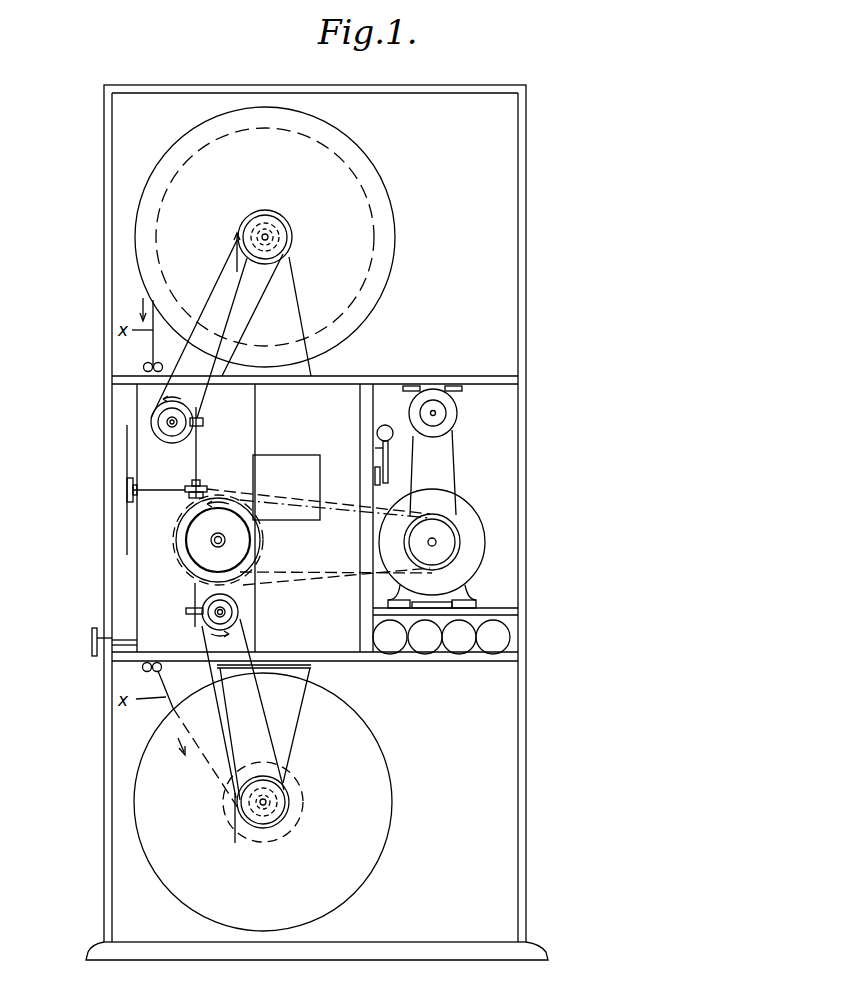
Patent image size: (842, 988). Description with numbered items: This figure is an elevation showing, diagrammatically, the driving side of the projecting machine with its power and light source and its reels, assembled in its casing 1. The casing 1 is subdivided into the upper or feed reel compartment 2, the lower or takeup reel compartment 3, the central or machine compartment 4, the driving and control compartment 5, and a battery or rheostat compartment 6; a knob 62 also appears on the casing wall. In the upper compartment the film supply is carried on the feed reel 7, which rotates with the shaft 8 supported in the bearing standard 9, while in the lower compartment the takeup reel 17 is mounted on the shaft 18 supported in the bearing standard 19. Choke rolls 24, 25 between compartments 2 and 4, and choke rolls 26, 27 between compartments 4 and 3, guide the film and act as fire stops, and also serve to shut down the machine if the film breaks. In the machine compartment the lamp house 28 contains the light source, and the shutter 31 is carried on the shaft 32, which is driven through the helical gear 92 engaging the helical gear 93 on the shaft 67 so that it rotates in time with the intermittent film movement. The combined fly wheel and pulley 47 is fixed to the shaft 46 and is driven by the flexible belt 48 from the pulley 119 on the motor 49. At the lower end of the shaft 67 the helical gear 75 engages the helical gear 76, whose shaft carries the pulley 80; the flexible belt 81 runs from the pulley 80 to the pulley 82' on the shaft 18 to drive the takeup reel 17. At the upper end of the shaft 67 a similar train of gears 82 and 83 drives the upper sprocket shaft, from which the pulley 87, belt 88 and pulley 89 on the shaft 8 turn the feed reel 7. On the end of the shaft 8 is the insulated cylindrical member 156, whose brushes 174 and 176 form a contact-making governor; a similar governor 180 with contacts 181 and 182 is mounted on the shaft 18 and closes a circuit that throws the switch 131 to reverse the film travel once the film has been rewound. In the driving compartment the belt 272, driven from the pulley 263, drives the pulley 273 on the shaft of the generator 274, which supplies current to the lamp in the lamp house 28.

The casing 1 is at (102, 362).
The upper or feed reel compartment 2 is at (498, 298).
The lower or takeup reel compartment 3 is at (492, 789).
The central or machine compartment 4 is at (120, 584).
The driving and control compartment 5 is at (505, 520).
The battery or rheostat compartment 6 is at (505, 630).
The feed reel 7 is at (385, 178).
The shaft 8 is at (272, 240).
The bearing standard 9 is at (300, 317).
The takeup reel 17 is at (392, 768).
The shaft 18 is at (284, 826).
The bearing standard 19 is at (298, 720).
The choke roll 24 is at (146, 363).
The choke roll 25 is at (161, 363).
The choke roll 26 is at (160, 670).
The choke roll 27 is at (145, 671).
The lamp house 28 is at (287, 455).
The shutter 31 is at (126, 441).
The shaft 32 is at (160, 490).
The shaft 46 is at (218, 547).
The combined fly wheel and pulley 47 is at (190, 567).
The flexible belt 48 is at (308, 571).
The motor 49 is at (476, 551).
The control knob 62 is at (92, 638).
The shaft 67 is at (198, 455).
The helical gear 75 is at (186, 613).
The helical gear 76 is at (232, 617).
The pulley 80 is at (240, 608).
The flexible belt 81 is at (268, 712).
The gear 82 is at (201, 419).
The pulley 82' is at (257, 859).
The gear 83 is at (169, 430).
The pulley 87 is at (152, 420).
The belt 88 is at (212, 295).
The pulley 89 is at (256, 212).
The helical gear 92 is at (204, 486).
The helical gear 93 is at (190, 495).
The pulley 119 is at (456, 530).
The switch 131 is at (389, 470).
The cup shaped or cylindrical member 156 is at (278, 222).
The brush 174 is at (236, 257).
The brush 176 is at (288, 228).
The governor or contact making means 180 is at (290, 809).
The contact 181 is at (234, 838).
The contact 182 is at (290, 793).
The pulley 263 is at (440, 554).
The belt 272 is at (453, 468).
The pulley 273 is at (426, 409).
The generator 274 is at (456, 411).